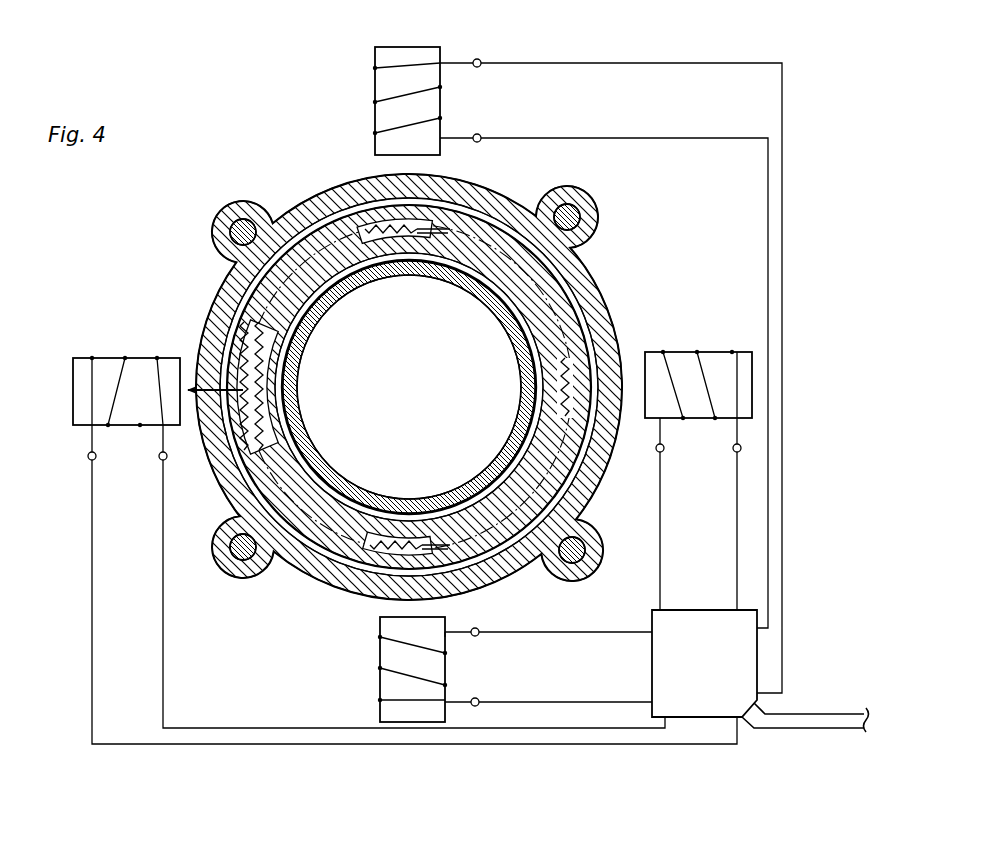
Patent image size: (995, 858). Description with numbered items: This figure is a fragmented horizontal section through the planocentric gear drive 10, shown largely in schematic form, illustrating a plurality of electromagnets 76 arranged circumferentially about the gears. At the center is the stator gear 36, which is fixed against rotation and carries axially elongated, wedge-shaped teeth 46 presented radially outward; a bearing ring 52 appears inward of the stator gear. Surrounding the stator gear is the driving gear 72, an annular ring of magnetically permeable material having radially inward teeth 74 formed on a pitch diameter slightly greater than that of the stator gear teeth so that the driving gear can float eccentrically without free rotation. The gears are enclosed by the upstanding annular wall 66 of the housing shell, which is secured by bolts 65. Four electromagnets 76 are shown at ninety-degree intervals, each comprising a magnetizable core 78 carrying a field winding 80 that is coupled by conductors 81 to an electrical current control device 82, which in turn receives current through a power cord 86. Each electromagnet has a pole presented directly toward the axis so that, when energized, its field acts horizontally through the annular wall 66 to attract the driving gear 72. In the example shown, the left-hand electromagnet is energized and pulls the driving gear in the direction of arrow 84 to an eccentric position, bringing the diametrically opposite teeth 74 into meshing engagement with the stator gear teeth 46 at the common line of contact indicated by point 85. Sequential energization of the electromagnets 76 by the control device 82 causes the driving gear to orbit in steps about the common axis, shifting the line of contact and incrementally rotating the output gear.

The planocentric gear drive 10 is at (405, 379).
The stator gear 36 is at (470, 243).
The teeth 46 is at (252, 330).
The bearing ring 52 is at (384, 503).
The bolts 65 is at (583, 222).
The annular wall 66 is at (612, 292).
The driving gear 72 is at (345, 556).
The teeth 74 is at (258, 392).
The electromagnets 76 is at (384, 370).
The magnetizable core 78 is at (401, 56).
The field winding 80 is at (440, 118).
The conductors 81 is at (713, 62).
The electrical current control device 82 is at (712, 610).
The arrow 84 is at (190, 386).
The point 85 is at (565, 390).
The power cord 86 is at (800, 713).